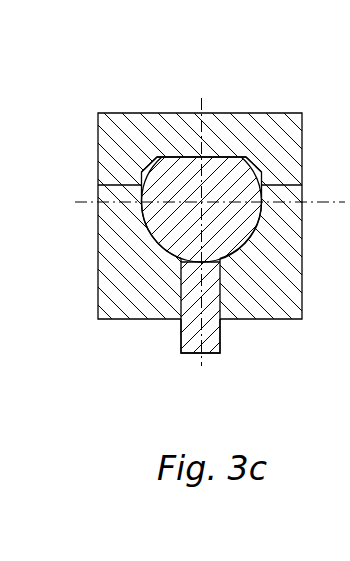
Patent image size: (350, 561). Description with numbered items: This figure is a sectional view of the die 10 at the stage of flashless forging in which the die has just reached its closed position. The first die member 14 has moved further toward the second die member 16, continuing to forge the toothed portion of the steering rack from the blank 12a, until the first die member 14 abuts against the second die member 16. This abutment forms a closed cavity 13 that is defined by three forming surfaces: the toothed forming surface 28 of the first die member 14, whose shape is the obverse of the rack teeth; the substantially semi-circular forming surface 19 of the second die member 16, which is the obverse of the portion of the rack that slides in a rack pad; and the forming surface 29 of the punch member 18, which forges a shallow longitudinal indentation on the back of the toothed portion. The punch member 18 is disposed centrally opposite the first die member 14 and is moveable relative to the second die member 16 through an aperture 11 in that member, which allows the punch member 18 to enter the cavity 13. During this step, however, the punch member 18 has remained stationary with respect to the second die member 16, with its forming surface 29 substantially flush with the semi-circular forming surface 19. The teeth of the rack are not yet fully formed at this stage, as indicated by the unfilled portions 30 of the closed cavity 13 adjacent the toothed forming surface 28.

The die 10 is at (175, 203).
The aperture 11 is at (223, 298).
The blank 12a is at (157, 195).
The closed cavity 13 is at (261, 239).
The first die member 14 is at (108, 150).
The second die member 16 is at (108, 282).
The punch member 18 is at (192, 334).
The forming surface 19 is at (149, 231).
The toothed forming surface 28 is at (215, 157).
The forming surface 29 is at (184, 259).
The unfilled portions 30 is at (150, 160).